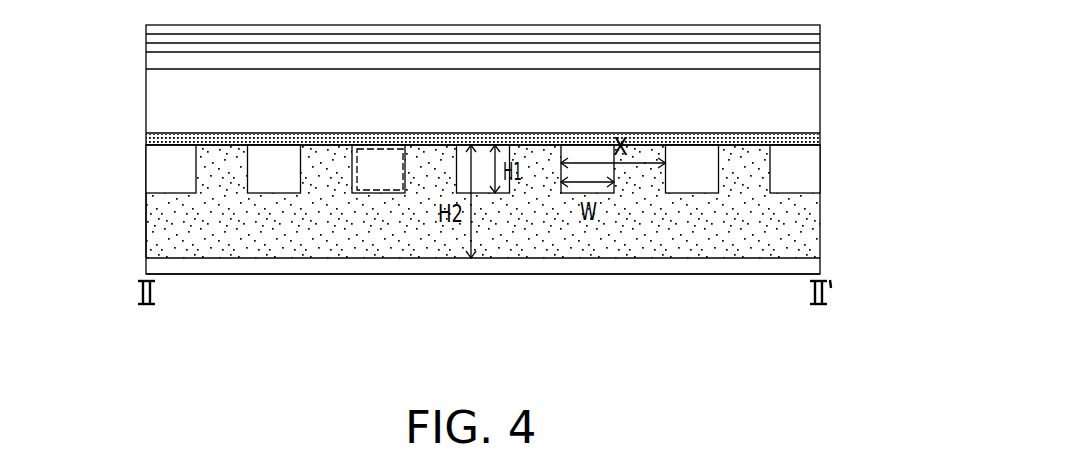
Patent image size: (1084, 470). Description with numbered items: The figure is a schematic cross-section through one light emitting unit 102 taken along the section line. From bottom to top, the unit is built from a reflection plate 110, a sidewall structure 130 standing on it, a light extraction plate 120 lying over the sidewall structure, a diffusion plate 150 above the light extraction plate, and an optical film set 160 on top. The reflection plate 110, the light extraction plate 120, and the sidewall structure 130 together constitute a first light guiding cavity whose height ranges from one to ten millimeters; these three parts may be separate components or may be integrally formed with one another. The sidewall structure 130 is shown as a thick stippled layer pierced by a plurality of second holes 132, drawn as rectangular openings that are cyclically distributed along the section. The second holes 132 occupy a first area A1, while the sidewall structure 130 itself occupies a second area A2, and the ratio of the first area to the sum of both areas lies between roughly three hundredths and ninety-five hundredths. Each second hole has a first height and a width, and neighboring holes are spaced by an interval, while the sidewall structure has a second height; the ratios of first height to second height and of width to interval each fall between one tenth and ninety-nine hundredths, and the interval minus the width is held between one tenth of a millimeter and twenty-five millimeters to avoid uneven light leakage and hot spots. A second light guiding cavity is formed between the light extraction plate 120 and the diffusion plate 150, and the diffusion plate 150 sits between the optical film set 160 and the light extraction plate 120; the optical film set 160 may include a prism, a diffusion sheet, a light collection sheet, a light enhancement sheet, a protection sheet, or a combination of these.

The light emitting unit 102 is at (893, 373).
The optical film set 160 is at (832, 57).
The diffusion plate 150 is at (815, 62).
The light extraction plate 120 is at (822, 138).
The sidewall structure 130 is at (815, 225).
The reflection plate 110 is at (810, 267).
The second holes 132 is at (272, 159).
The first area A1 is at (352, 170).
The second area A2 is at (146, 237).